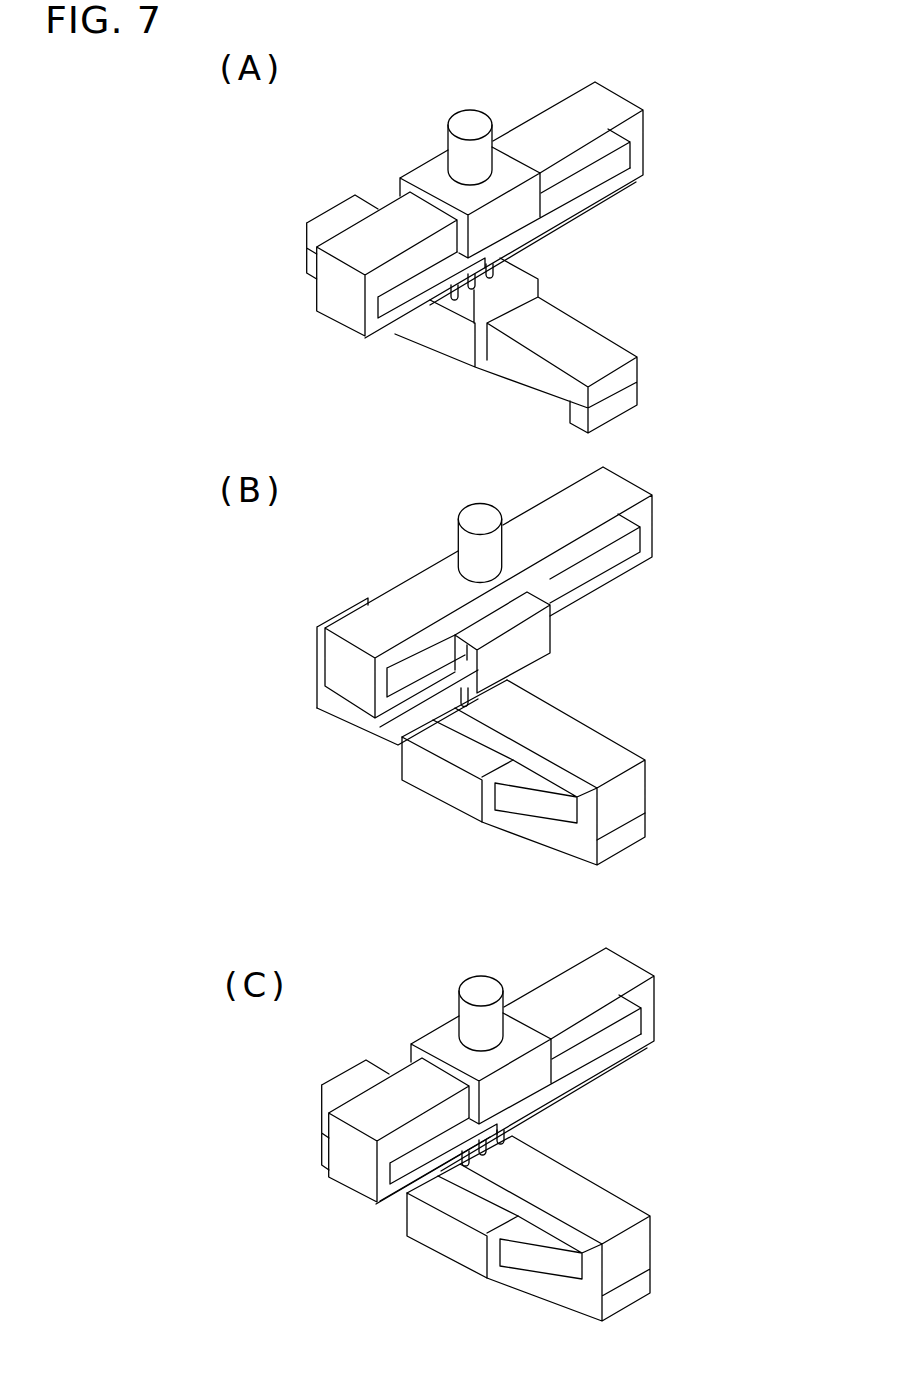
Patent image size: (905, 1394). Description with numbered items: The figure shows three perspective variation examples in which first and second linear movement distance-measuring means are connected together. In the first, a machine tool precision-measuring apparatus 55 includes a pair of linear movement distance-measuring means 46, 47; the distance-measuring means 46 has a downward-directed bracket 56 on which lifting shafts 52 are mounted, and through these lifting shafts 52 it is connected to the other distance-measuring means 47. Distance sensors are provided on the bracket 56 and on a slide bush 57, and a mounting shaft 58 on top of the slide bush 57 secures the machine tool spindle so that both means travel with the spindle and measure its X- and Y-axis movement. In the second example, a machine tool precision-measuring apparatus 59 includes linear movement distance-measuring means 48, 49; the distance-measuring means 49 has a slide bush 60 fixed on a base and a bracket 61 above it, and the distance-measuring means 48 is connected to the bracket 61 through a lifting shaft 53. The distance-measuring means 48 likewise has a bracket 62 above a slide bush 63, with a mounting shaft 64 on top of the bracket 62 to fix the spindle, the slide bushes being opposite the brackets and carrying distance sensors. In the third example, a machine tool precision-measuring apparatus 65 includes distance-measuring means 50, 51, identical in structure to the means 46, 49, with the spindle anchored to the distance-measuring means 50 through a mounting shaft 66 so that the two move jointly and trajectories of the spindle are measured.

The linear movement distance-measuring means 46 is at (399, 152).
The linear movement distance-measuring means 47 is at (415, 360).
The linear movement distance-measuring means 48 is at (413, 559).
The linear movement distance-measuring means 49 is at (384, 792).
The linear movement distance-measuring means 50 is at (510, 961).
The linear movement distance-measuring means 51 is at (379, 1233).
The lifting shafts 52 is at (459, 292).
The lifting shaft 53 is at (383, 701).
The machine tool precision-measuring apparatus 55 is at (664, 70).
The bracket 56 is at (643, 157).
The slide bush 57 is at (513, 170).
The mounting shaft 58 is at (479, 140).
The machine tool precision-measuring apparatus 59 is at (692, 585).
The slide bush 60 is at (450, 787).
The bracket 61 is at (580, 737).
The bracket 62 is at (618, 490).
The slide bush 63 is at (535, 640).
The mounting shaft 64 is at (493, 543).
The machine tool precision-measuring apparatus 65 is at (706, 944).
The mounting shaft 66 is at (480, 1028).